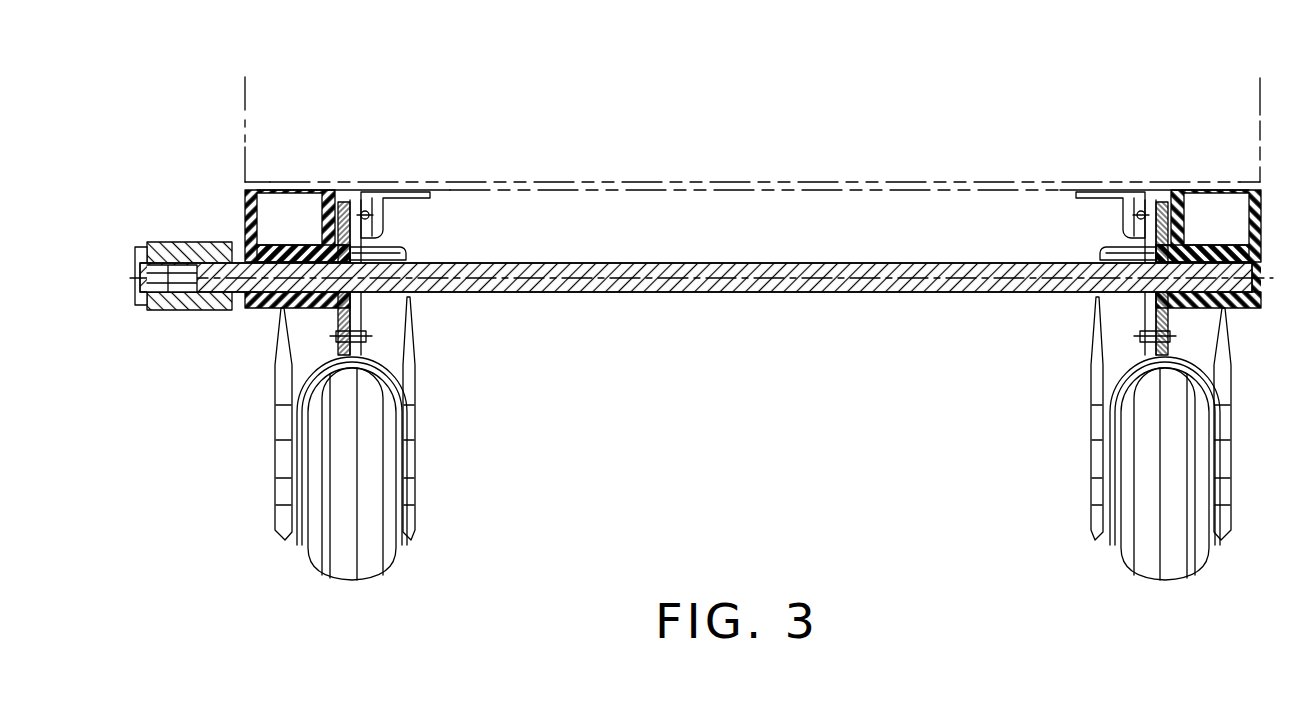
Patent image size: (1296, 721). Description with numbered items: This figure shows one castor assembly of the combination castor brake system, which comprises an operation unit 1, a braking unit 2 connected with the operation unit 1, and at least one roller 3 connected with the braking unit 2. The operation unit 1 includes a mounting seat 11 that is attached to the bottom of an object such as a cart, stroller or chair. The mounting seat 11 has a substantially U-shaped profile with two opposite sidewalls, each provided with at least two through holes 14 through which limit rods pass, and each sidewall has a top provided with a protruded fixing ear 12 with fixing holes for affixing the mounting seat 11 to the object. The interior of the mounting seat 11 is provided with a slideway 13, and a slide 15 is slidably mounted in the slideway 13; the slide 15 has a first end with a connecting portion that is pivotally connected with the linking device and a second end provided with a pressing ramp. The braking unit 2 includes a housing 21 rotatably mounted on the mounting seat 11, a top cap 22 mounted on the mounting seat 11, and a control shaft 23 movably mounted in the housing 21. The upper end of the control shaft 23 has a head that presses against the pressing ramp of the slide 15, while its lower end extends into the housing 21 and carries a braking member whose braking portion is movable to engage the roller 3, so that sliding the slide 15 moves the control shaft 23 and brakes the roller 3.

The operation unit 1 is at (233, 225).
The mounting seat 11 is at (247, 202).
The fixing ear 12 is at (303, 310).
The slideway 13 is at (270, 310).
The through holes 14 is at (163, 242).
The slide 15 is at (180, 310).
The braking unit 2 is at (770, 156).
The housing 21 is at (722, 293).
The top cap 22 is at (363, 318).
The control shaft 23 is at (361, 300).
The roller 3 is at (432, 461).